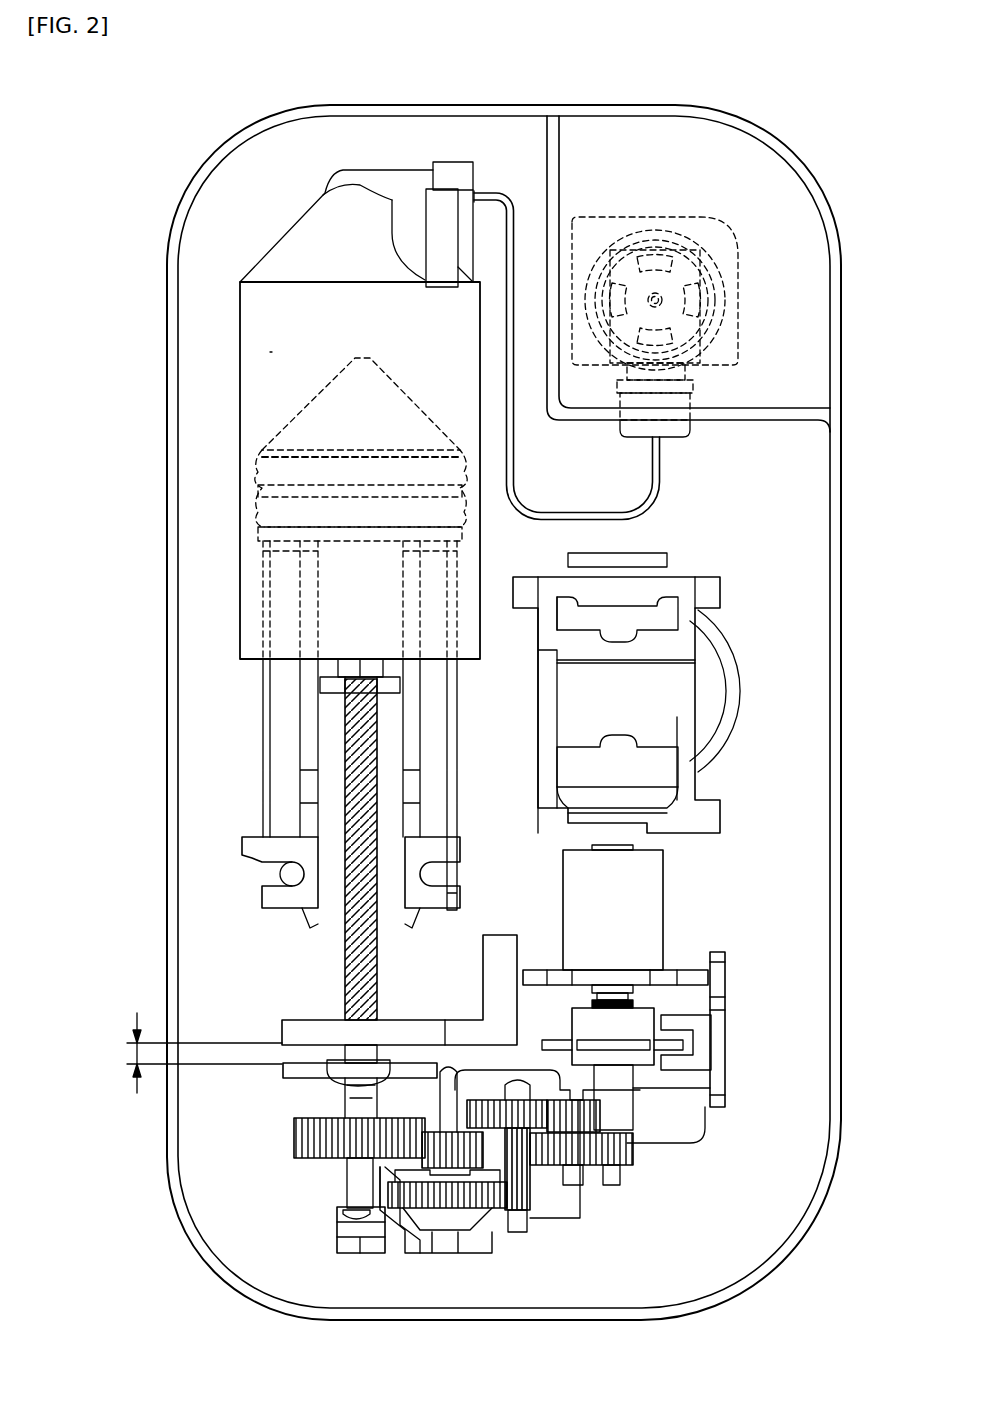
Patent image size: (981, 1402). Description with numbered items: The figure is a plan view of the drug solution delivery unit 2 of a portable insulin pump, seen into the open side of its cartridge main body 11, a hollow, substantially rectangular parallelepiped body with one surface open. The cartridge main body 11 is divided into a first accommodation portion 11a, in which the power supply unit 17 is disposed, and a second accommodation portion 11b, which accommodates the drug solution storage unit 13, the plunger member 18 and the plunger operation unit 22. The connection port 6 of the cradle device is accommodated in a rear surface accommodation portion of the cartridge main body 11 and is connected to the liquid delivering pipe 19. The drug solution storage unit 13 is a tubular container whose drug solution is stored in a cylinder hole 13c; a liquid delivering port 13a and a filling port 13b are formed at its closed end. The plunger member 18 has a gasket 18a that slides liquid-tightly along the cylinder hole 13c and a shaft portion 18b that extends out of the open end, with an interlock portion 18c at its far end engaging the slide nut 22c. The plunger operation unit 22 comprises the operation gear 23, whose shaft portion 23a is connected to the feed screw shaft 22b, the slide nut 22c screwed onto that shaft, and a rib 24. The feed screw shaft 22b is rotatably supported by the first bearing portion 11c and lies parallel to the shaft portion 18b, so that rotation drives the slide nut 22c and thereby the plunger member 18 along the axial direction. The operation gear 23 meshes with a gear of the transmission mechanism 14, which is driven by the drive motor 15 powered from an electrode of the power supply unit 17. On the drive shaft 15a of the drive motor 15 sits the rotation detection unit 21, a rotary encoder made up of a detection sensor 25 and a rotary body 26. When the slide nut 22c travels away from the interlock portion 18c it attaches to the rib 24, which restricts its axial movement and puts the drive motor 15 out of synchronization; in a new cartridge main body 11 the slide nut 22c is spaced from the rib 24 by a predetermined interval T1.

The drug solution delivery unit 2 is at (92, 648).
The connection port 6 is at (745, 298).
The cartridge main body 11 is at (165, 283).
The first accommodation portion 11a is at (800, 627).
The second accommodation portion 11b is at (198, 389).
The first bearing portion 11c is at (348, 668).
The drug solution storage unit 13 is at (281, 414).
The liquid delivering port 13a is at (402, 180).
The filling port 13b is at (445, 207).
The cylinder hole 13c is at (273, 352).
The transmission mechanism 14 is at (517, 1262).
The drive motor 15 is at (650, 893).
The drive shaft 15a is at (620, 992).
The power supply unit 17 is at (713, 690).
The plunger member 18 is at (273, 881).
The gasket 18a is at (273, 423).
The shaft portion 18b is at (273, 783).
The interlock portion 18c is at (255, 855).
The liquid delivering pipe 19 is at (510, 213).
The rotation detection unit 21 is at (740, 1047).
The plunger operation unit 22 is at (379, 1208).
The feed screw shaft 22b is at (348, 975).
The slide nut 22c is at (282, 1032).
The operation gear 23 is at (312, 1160).
The shaft portion 23a is at (355, 1170).
The rib 24 is at (282, 1072).
The detection sensor 25 is at (700, 1025).
The rotary body 26 is at (640, 1023).
The predetermined interval T1 is at (191, 1053).